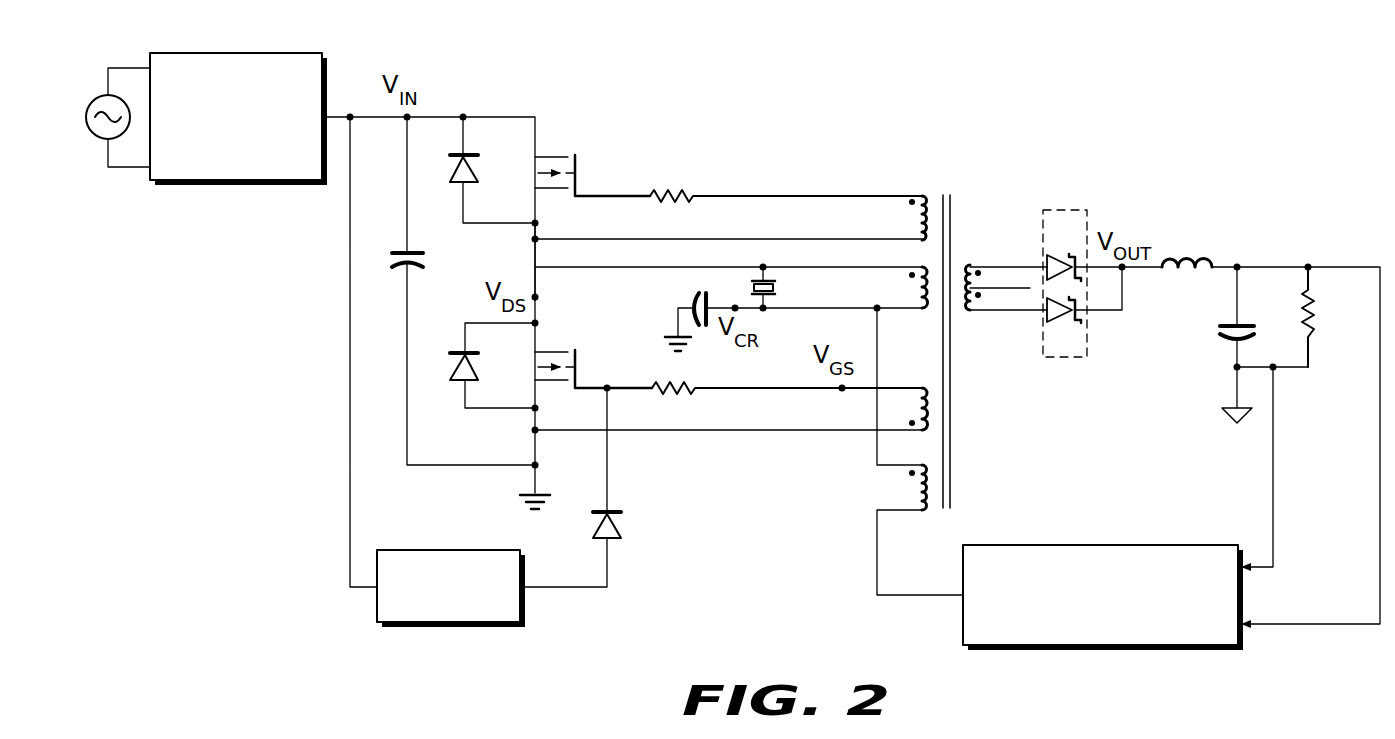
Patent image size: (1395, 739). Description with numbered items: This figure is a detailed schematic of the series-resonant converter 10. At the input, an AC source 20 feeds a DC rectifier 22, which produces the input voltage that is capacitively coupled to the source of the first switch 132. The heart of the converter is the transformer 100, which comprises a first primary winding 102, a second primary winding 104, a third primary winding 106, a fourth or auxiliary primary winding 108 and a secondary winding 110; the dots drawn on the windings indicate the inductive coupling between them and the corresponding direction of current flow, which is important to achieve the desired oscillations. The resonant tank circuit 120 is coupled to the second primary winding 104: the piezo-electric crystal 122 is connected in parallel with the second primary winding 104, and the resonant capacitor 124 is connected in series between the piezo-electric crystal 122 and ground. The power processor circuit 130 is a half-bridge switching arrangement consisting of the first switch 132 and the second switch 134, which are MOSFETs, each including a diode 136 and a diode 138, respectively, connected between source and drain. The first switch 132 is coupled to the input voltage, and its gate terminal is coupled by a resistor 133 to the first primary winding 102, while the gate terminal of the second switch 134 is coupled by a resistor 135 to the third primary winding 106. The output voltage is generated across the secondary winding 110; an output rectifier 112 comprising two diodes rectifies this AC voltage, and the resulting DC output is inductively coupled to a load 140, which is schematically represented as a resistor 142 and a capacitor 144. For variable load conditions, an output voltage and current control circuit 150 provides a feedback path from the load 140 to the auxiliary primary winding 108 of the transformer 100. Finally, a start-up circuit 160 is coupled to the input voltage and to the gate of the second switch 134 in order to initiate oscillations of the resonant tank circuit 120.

The series-resonant converter 10 is at (607, 100).
The AC source 20 is at (100, 95).
The DC rectifier 22 is at (207, 50).
The transformer 100 is at (945, 180).
The first primary winding 102 is at (912, 210).
The second primary winding 104 is at (930, 312).
The third primary winding 106 is at (928, 388).
The auxiliary primary winding 108 is at (912, 483).
The secondary winding 110 is at (1020, 240).
The output rectifier 112 is at (1063, 362).
The resonant tank circuit 120 is at (695, 282).
The piezo-electric crystal 122 is at (782, 285).
The resonant capacitor 124 is at (704, 330).
The power processor circuit 130 is at (520, 235).
The first switch 132 is at (545, 157).
The resistor 133 is at (693, 205).
The second switch 134 is at (550, 352).
The resistor 135 is at (683, 398).
The diode 136 is at (470, 185).
The diode 138 is at (458, 388).
The load 140 is at (1272, 262).
The resistor 142 is at (1322, 322).
The capacitor 144 is at (1215, 330).
The output voltage and current control circuit 150 is at (1177, 545).
The start-up circuit 160 is at (433, 545).